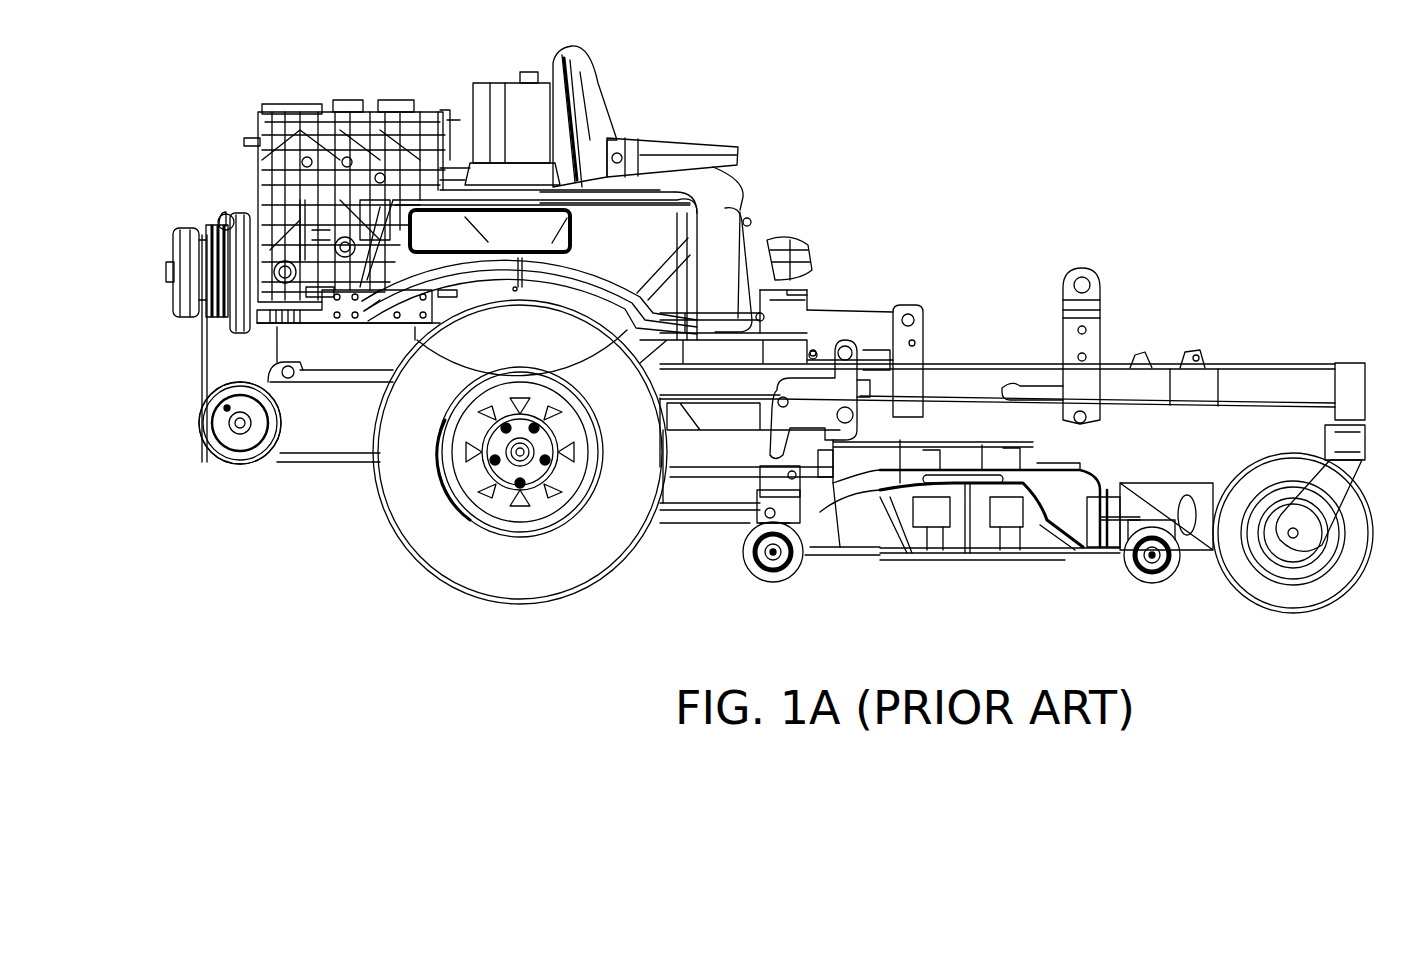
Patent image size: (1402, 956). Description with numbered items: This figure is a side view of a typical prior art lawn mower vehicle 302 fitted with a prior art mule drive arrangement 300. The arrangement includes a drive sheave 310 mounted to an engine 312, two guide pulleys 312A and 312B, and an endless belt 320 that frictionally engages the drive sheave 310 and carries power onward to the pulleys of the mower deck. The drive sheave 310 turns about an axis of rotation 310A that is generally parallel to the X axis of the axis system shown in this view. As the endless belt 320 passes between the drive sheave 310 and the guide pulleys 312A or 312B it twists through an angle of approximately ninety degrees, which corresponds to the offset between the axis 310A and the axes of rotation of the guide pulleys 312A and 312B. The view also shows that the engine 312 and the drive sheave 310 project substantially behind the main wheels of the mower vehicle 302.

The prior art mule drive arrangement 300 is at (190, 462).
The prior art lawn mower vehicle 302 is at (706, 102).
The drive sheave 310 is at (197, 226).
The axis of rotation 310A is at (172, 272).
The engine 312 is at (303, 98).
The guide pulley 312A is at (228, 460).
The guide pulley 312B is at (252, 481).
The endless belt 320 is at (340, 465).